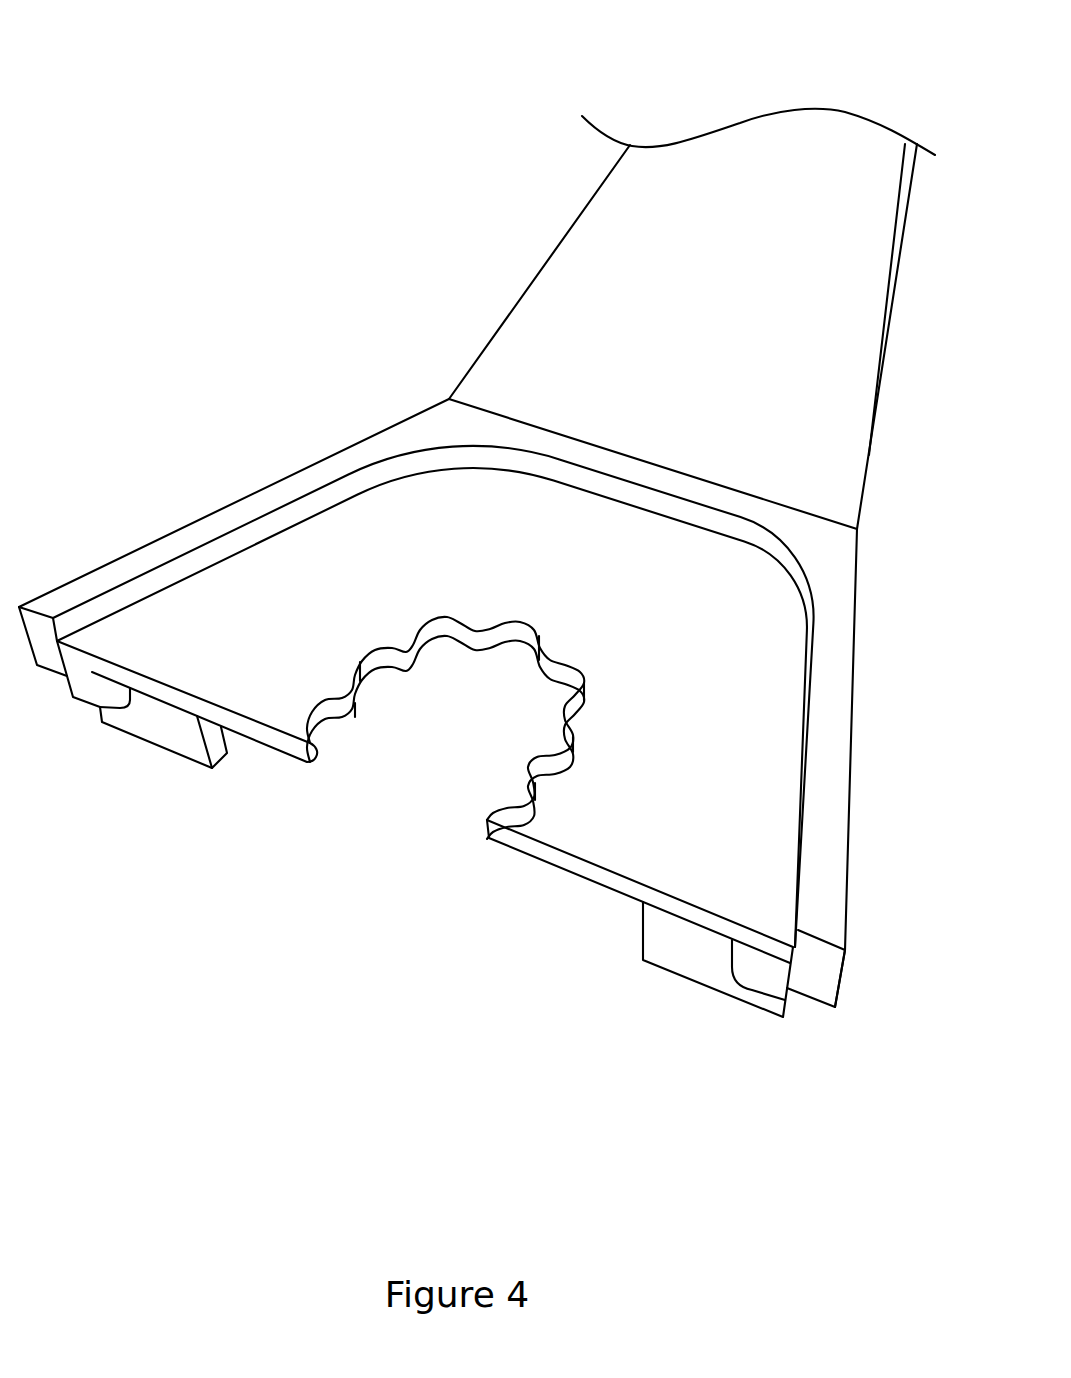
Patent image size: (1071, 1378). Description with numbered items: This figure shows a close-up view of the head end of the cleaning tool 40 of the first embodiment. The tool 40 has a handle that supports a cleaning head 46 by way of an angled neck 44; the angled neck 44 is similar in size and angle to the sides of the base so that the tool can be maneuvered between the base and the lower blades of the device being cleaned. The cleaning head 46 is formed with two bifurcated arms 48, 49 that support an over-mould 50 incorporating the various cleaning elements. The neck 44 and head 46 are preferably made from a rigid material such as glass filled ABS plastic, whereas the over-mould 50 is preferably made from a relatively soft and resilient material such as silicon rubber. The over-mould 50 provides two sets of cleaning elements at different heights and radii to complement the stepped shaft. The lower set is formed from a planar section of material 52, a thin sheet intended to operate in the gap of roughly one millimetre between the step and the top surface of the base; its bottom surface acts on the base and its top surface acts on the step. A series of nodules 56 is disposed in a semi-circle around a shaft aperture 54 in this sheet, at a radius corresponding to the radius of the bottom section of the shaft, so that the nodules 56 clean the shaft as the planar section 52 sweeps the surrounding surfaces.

The tool 40 is at (93, 113).
The angled neck 44 is at (637, 261).
The cleaning head 46 is at (317, 458).
The bifurcated arm 48 is at (817, 852).
The bifurcated arm 49 is at (170, 548).
The over-mould 50 is at (267, 747).
The planar section of material 52 is at (610, 776).
The shaft aperture 54 is at (437, 722).
The nodules 56 is at (355, 703).